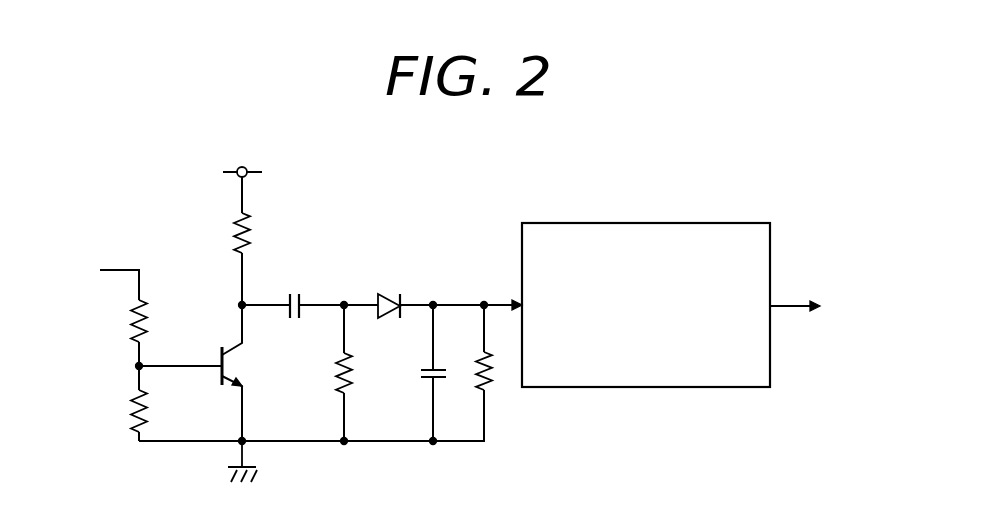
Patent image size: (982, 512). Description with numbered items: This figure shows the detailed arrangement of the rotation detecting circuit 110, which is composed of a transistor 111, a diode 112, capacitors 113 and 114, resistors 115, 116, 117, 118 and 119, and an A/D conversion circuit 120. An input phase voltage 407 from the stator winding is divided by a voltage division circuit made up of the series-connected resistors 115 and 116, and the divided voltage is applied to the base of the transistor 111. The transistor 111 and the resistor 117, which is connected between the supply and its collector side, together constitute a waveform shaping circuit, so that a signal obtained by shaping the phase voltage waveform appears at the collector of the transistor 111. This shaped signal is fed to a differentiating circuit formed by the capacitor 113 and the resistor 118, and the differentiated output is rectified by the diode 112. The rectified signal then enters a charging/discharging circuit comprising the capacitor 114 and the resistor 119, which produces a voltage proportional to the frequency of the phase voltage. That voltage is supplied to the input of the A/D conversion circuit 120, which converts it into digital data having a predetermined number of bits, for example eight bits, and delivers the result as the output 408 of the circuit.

The detection circuit 110 is at (498, 201).
The transistor 111 is at (222, 356).
The diode 112 is at (391, 293).
The capacitor 113 is at (298, 293).
The capacitor 114 is at (427, 370).
The resistor 115 is at (131, 306).
The resistor 116 is at (131, 399).
The resistor 117 is at (234, 218).
The resistor 118 is at (336, 373).
The resistor 119 is at (485, 390).
The A/D conversion circuit 120 is at (697, 223).
The input signal 407 is at (98, 277).
The output signal 408 is at (819, 308).